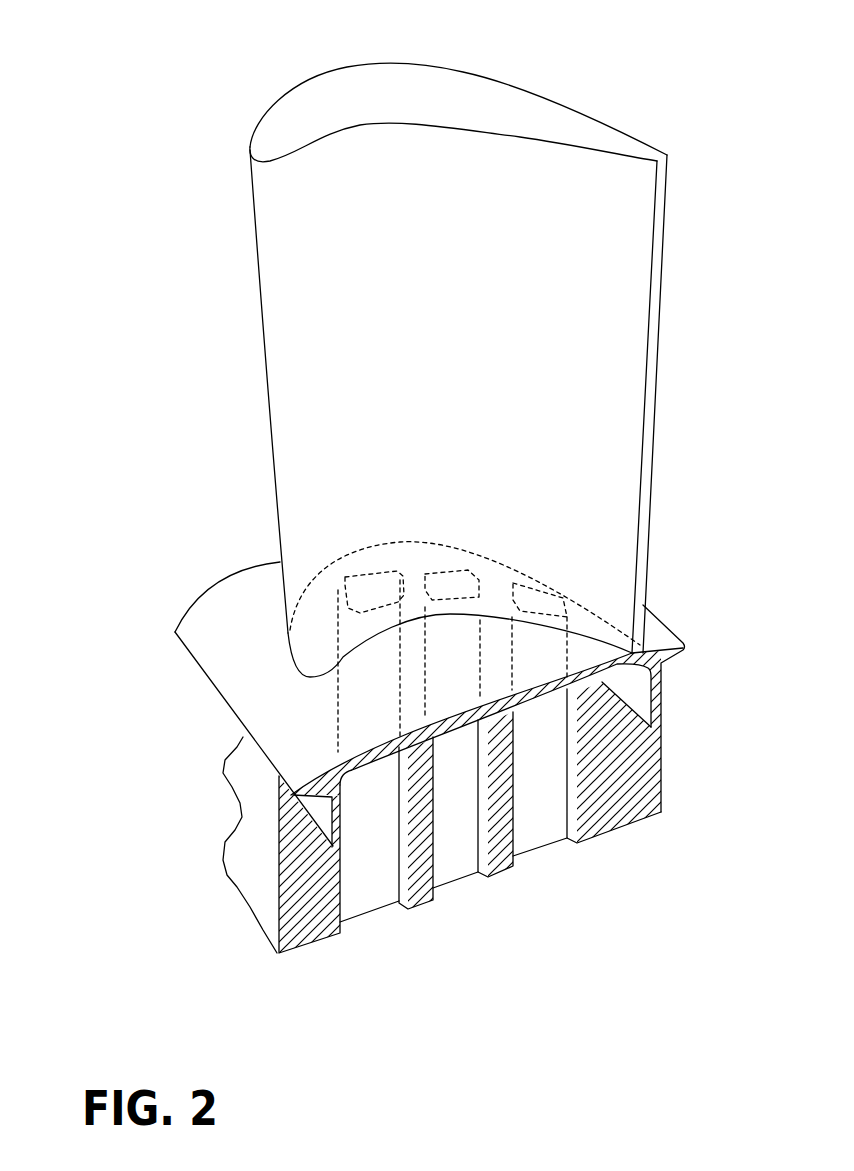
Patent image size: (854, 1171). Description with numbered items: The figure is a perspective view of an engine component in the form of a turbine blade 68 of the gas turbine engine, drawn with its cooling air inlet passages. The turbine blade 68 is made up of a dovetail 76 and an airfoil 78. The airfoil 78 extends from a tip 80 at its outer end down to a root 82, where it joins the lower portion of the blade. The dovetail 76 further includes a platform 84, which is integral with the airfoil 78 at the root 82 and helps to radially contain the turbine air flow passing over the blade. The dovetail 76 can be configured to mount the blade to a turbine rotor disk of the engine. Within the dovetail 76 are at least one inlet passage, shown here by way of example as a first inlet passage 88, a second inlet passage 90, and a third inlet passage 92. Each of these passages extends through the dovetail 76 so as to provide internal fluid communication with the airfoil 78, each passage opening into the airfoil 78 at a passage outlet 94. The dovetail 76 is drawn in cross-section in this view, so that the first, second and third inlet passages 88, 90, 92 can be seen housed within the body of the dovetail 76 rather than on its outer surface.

The turbine blade 68 is at (105, 163).
The dovetail 76 is at (252, 818).
The airfoil 78 is at (258, 444).
The tip 80 is at (343, 107).
The root 82 is at (592, 627).
The platform 84 is at (243, 665).
The first inlet passage 88 is at (378, 945).
The second inlet passage 90 is at (464, 917).
The third inlet passage 92 is at (549, 882).
The passage outlet 94 is at (348, 557).